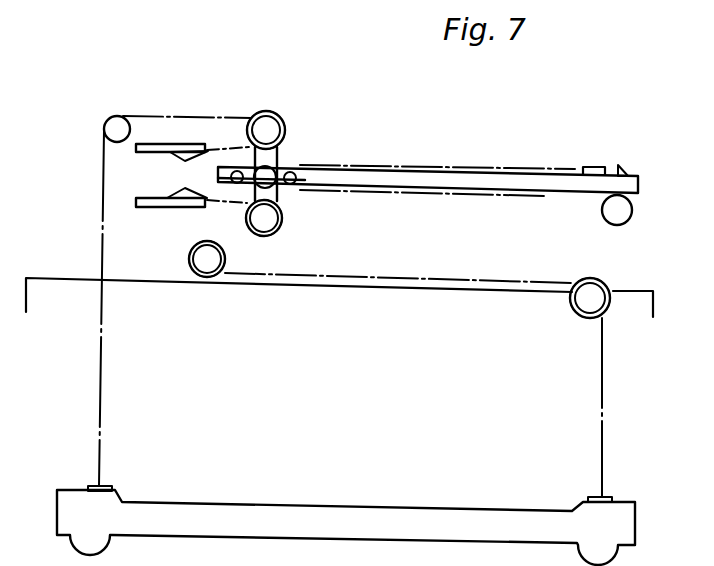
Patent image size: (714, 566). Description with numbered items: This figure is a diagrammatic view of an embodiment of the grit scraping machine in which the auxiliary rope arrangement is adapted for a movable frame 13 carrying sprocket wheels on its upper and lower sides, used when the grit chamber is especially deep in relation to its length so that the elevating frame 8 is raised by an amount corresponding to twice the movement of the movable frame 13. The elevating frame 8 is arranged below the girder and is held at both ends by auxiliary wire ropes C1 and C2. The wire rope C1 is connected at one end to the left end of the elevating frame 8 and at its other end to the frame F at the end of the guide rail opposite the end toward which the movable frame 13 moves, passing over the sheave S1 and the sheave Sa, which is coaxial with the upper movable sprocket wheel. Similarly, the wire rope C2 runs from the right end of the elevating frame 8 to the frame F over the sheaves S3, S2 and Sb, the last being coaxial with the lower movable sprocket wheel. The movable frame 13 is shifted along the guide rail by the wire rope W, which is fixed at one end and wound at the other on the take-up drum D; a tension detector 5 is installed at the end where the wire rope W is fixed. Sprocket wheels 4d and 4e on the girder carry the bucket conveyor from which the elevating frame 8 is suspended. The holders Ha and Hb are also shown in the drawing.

The sheave S1 is at (115, 115).
The sheave S2 is at (205, 257).
The sheave S3 is at (588, 305).
The sheave Sa is at (266, 128).
The sheave Sb is at (268, 216).
The upper holder Ha is at (285, 112).
The lower holder Hb is at (275, 233).
The movable frame 13 is at (272, 157).
The frame F is at (162, 146).
The wire rope W is at (463, 170).
The tension detector 5 is at (597, 166).
The take-up drum D is at (632, 209).
The sprocket wheel 4d is at (192, 266).
The end sprocket wheel 4e is at (598, 285).
The auxiliary wire rope C1 is at (100, 373).
The auxiliary wire rope C2 is at (601, 413).
The elevating frame 8 is at (385, 513).